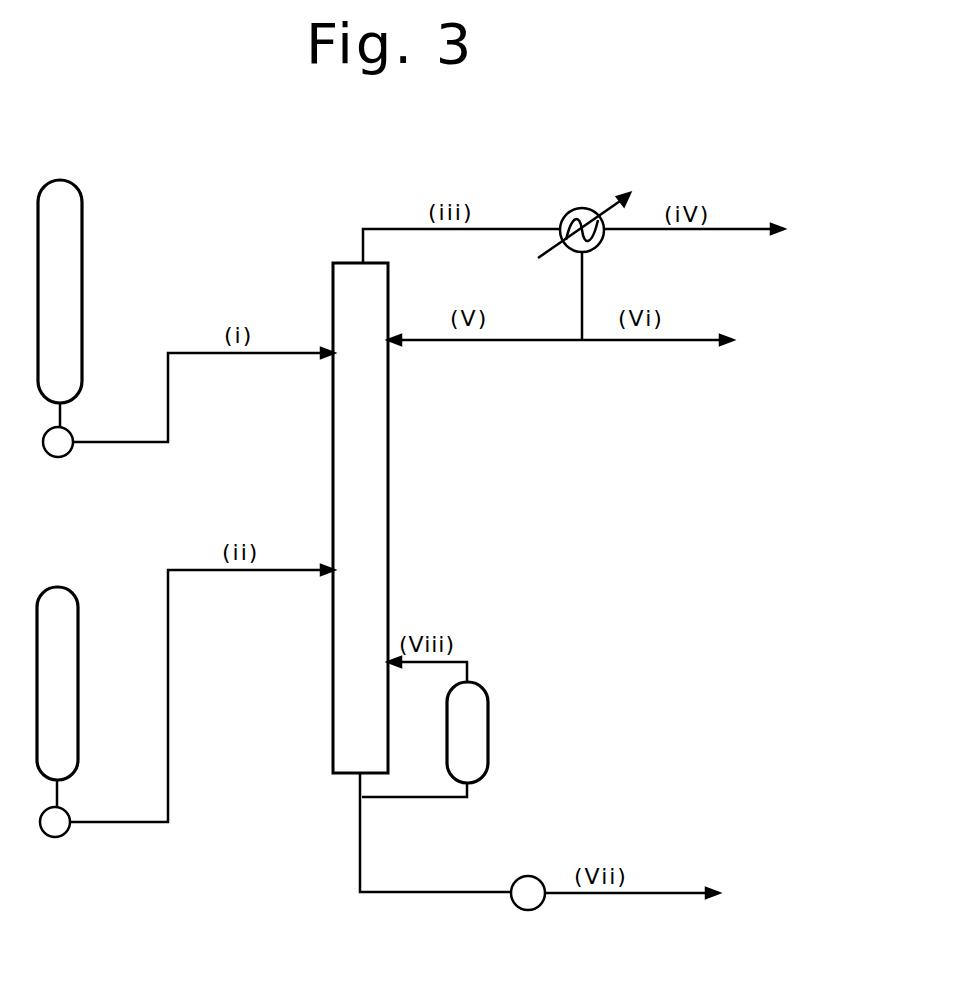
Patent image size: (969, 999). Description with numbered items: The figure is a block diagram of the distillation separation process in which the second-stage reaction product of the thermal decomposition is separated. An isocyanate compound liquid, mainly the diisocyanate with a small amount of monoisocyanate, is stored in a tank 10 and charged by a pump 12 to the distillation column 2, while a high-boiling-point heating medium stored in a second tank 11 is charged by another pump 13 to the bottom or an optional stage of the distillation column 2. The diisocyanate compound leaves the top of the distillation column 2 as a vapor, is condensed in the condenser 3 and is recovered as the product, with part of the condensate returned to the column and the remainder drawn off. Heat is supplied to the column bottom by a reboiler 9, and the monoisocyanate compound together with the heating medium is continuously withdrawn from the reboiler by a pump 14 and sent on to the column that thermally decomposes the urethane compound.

The distillation column 2 is at (392, 476).
The condenser 3 is at (583, 206).
The reboiler 9 is at (492, 700).
The tank for storing an isocyanate compound 10 is at (85, 200).
The tank for storing a high-boiling-point heating medium 11 is at (80, 612).
The pump for charging an isocyanate compound 12 is at (66, 453).
The pump for charging a high-boiling-point heating medium 13 is at (63, 833).
The pump for withdrawal from the reboiler 14 is at (533, 910).